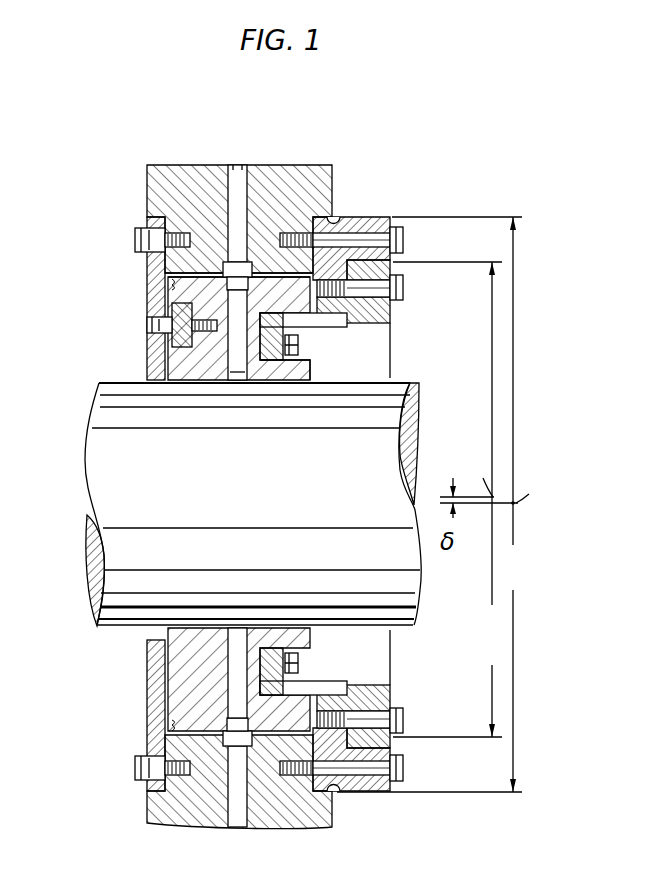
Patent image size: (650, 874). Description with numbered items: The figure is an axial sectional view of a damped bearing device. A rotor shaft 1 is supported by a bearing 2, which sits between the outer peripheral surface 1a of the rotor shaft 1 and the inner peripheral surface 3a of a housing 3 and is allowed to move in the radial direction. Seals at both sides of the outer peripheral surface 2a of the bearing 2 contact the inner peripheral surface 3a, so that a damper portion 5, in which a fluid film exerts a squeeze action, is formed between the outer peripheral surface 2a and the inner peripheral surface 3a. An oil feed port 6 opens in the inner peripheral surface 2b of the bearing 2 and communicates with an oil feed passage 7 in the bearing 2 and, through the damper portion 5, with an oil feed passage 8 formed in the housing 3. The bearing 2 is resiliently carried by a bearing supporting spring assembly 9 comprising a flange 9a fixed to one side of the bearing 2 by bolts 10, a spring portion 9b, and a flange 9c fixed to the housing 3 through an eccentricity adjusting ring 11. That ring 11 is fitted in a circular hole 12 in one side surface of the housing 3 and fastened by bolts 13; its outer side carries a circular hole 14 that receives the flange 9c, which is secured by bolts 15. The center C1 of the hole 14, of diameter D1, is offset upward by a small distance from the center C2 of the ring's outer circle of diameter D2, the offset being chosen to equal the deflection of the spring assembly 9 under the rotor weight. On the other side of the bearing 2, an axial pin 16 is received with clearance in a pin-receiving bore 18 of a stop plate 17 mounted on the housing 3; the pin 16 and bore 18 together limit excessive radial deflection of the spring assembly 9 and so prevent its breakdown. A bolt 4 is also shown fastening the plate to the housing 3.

The rotor shaft 1 is at (108, 422).
The outer peripheral surface of the rotor shaft 1a is at (120, 380).
The bearing 2 is at (205, 380).
The outer peripheral surface of the bearing 2a is at (198, 275).
The inner peripheral surface of the bearing 2b is at (271, 381).
The housing 3 is at (311, 176).
The inner peripheral surface of the housing 3a is at (271, 280).
The bolt 4 is at (165, 265).
The damper portion 5 is at (222, 268).
The oil feed port 6 is at (238, 381).
The oil feed passage 7 is at (240, 359).
The oil feed passage 8 is at (238, 205).
The bearing supporting spring assembly 9 is at (391, 323).
The flange 9a is at (285, 355).
The spring portion 9b is at (340, 326).
The flange 9c is at (393, 315).
The bolts 10 is at (299, 347).
The eccentricity adjusting ring 11 is at (371, 221).
The circular hole 12 is at (336, 222).
The bolts 13 is at (403, 239).
The circular hole 14 is at (393, 268).
The bolts 15 is at (403, 289).
The pin 16 is at (145, 323).
The stop plate 17 is at (160, 275).
The pin-receiving bore 18 is at (150, 320).
The center of the hole C1 is at (467, 473).
The center of the outer circle C2 is at (495, 496).
The diameter of the hole D1 is at (449, 499).
The diameter of the outer circle D2 is at (434, 504).